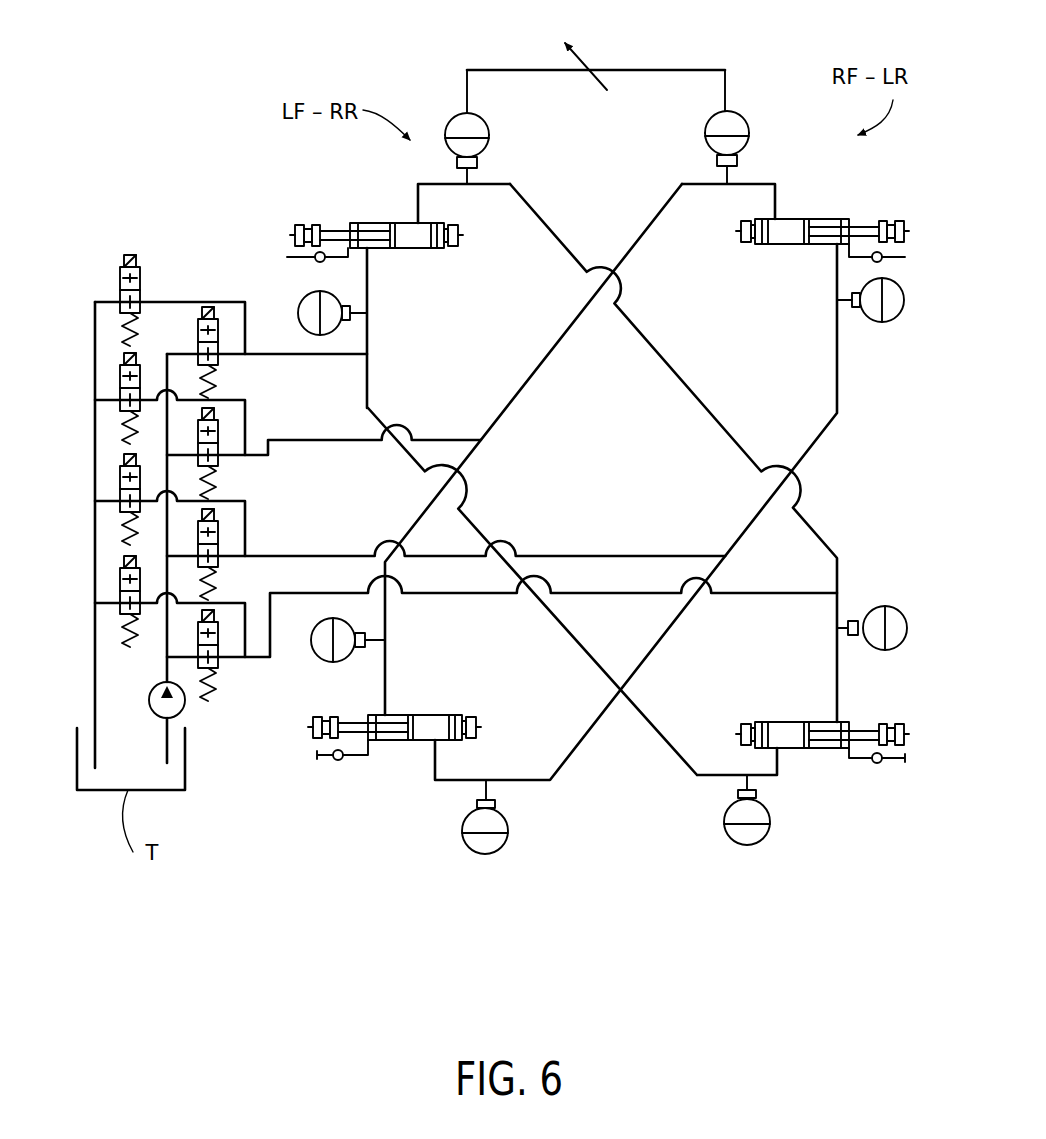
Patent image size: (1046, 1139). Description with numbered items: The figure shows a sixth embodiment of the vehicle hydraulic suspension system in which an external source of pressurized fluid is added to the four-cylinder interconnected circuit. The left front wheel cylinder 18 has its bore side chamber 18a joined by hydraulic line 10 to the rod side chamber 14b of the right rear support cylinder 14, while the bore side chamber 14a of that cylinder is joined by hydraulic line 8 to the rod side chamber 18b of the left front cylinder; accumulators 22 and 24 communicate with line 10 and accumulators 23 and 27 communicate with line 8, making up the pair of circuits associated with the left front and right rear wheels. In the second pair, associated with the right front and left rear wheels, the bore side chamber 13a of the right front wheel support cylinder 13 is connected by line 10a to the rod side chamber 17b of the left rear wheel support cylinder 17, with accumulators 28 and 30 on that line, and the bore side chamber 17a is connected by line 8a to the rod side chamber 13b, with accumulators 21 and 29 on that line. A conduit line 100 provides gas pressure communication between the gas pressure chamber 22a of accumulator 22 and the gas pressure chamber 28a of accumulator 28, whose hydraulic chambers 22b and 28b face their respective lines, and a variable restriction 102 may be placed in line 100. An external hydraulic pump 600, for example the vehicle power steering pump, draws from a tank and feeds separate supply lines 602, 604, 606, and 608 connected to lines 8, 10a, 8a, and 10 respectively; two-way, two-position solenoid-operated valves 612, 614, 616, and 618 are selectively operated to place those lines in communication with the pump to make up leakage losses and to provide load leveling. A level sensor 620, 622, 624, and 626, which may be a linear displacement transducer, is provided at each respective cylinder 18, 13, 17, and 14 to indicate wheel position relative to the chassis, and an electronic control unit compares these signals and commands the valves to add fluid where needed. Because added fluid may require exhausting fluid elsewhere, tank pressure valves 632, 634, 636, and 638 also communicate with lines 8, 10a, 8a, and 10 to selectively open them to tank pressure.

The conduit line 100 is at (663, 70).
The variable restriction 102 is at (583, 60).
The accumulator 22 is at (482, 122).
The gas pressure chamber 22a is at (472, 128).
The hydraulic chamber 22b is at (472, 148).
The accumulator 28 is at (770, 124).
The gas pressure chamber 28a is at (737, 127).
The hydraulic chamber 28b is at (732, 147).
The left front wheel cylinder 18 is at (376, 227).
The bore side chamber 18a is at (405, 222).
The rod side chamber 18b is at (365, 222).
The right front wheel support cylinder 13 is at (822, 235).
The bore side chamber 13a is at (790, 219).
The rod side chamber 13b is at (832, 220).
The left rear wheel support cylinder 17 is at (394, 727).
The bore side chamber 17a is at (435, 715).
The rod side chamber 17b is at (378, 722).
The right rear support cylinder 14 is at (822, 727).
The bore side chamber 14a is at (785, 722).
The rod side chamber 14b is at (845, 722).
The level sensor 620 is at (285, 246).
The level sensor 622 is at (908, 252).
The level sensor 624 is at (322, 762).
The level sensor 626 is at (898, 766).
The accumulator 23 is at (300, 298).
The accumulator 29 is at (895, 318).
The accumulator 30 is at (320, 657).
The accumulator 24 is at (887, 606).
The accumulator 21 is at (460, 855).
The accumulator 27 is at (775, 850).
The hydraulic line 8 is at (367, 380).
The hydraulic line 8a is at (837, 367).
The hydraulic line 10 is at (545, 218).
The hydraulic line 10a is at (640, 235).
The supply line 602 is at (367, 328).
The supply line 604 is at (330, 440).
The supply line 606 is at (332, 553).
The supply line 608 is at (468, 593).
The solenoid-operated valve 612 is at (218, 353).
The solenoid-operated valve 614 is at (218, 440).
The solenoid-operated valve 616 is at (218, 542).
The solenoid-operated valve 618 is at (218, 645).
The tank pressure valve 632 is at (120, 290).
The tank pressure valve 634 is at (120, 395).
The tank pressure valve 636 is at (120, 490).
The tank pressure valve 638 is at (120, 600).
The external hydraulic pump 600 is at (173, 703).